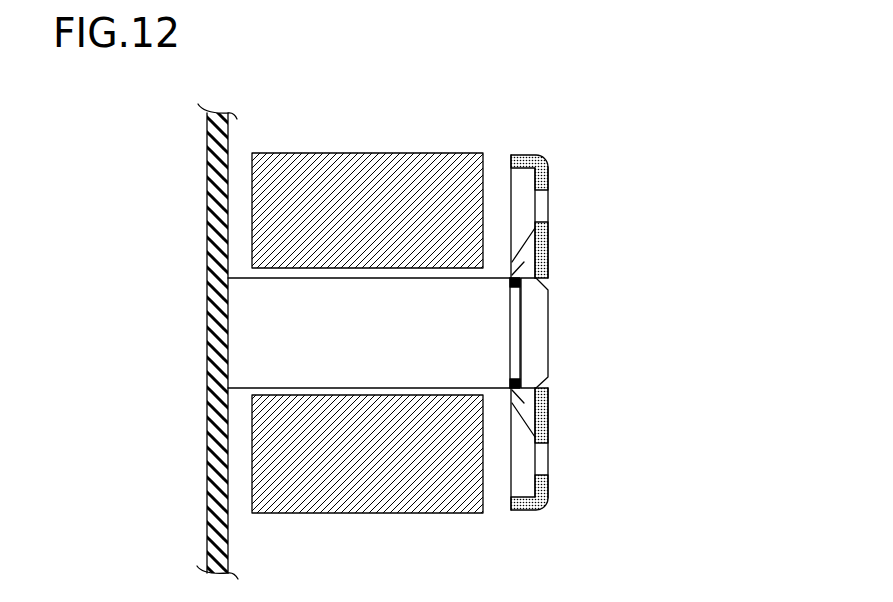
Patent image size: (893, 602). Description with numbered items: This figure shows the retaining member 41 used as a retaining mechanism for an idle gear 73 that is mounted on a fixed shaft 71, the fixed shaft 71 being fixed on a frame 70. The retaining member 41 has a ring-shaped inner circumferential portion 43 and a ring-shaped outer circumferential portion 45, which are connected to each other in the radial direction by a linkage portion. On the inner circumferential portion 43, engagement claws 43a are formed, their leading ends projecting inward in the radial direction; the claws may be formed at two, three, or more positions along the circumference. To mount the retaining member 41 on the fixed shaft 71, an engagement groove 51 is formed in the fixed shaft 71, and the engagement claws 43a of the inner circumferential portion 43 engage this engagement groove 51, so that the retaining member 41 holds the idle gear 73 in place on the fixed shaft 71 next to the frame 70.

The retaining member 41 is at (599, 346).
The inner circumferential portion 43 is at (548, 423).
The engagement claws 43a is at (532, 264).
The outer circumferential portion 45 is at (548, 508).
The engagement groove 51 is at (513, 356).
The frame 70 is at (207, 225).
The fixed shaft 71 is at (548, 310).
The idle gear 73 is at (355, 493).